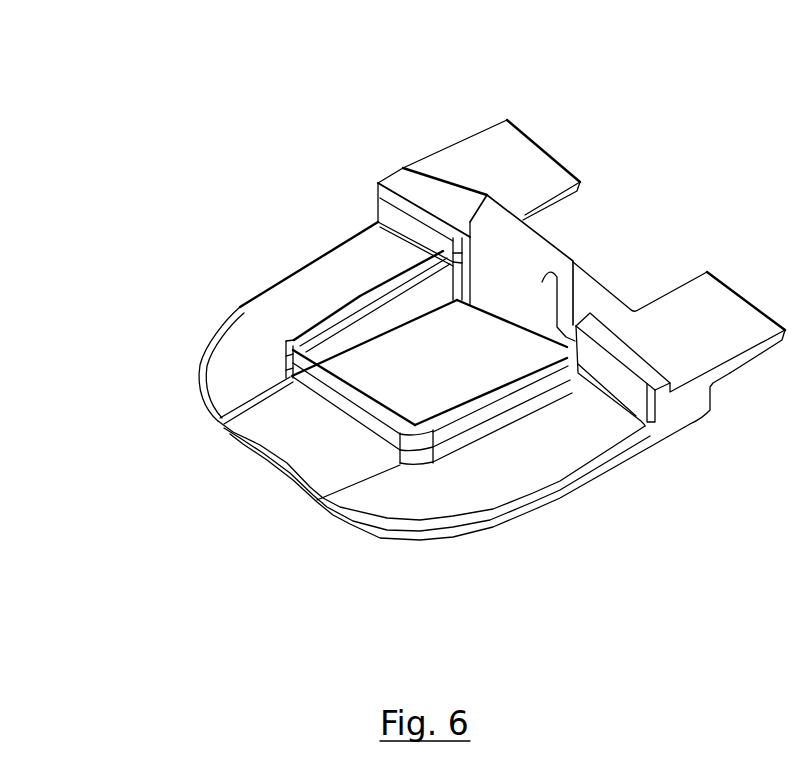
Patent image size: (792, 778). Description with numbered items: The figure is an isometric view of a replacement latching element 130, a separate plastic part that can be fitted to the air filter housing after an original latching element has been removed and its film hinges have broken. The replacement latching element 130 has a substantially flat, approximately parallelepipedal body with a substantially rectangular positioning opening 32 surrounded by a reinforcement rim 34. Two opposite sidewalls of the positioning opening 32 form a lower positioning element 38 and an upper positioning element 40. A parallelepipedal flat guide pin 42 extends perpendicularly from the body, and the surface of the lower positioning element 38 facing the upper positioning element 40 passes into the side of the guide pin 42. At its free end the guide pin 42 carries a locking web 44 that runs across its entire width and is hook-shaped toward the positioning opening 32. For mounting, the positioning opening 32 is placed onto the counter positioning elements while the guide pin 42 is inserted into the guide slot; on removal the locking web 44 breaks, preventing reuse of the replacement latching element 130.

The replacement latching element 130 is at (176, 76).
The positioning opening 32 is at (368, 360).
The reinforcement rim 34 is at (484, 405).
The lower positioning element 38 is at (502, 305).
The upper positioning element 40 is at (381, 400).
The guide pin 42 is at (563, 296).
The locking web 44 is at (487, 227).